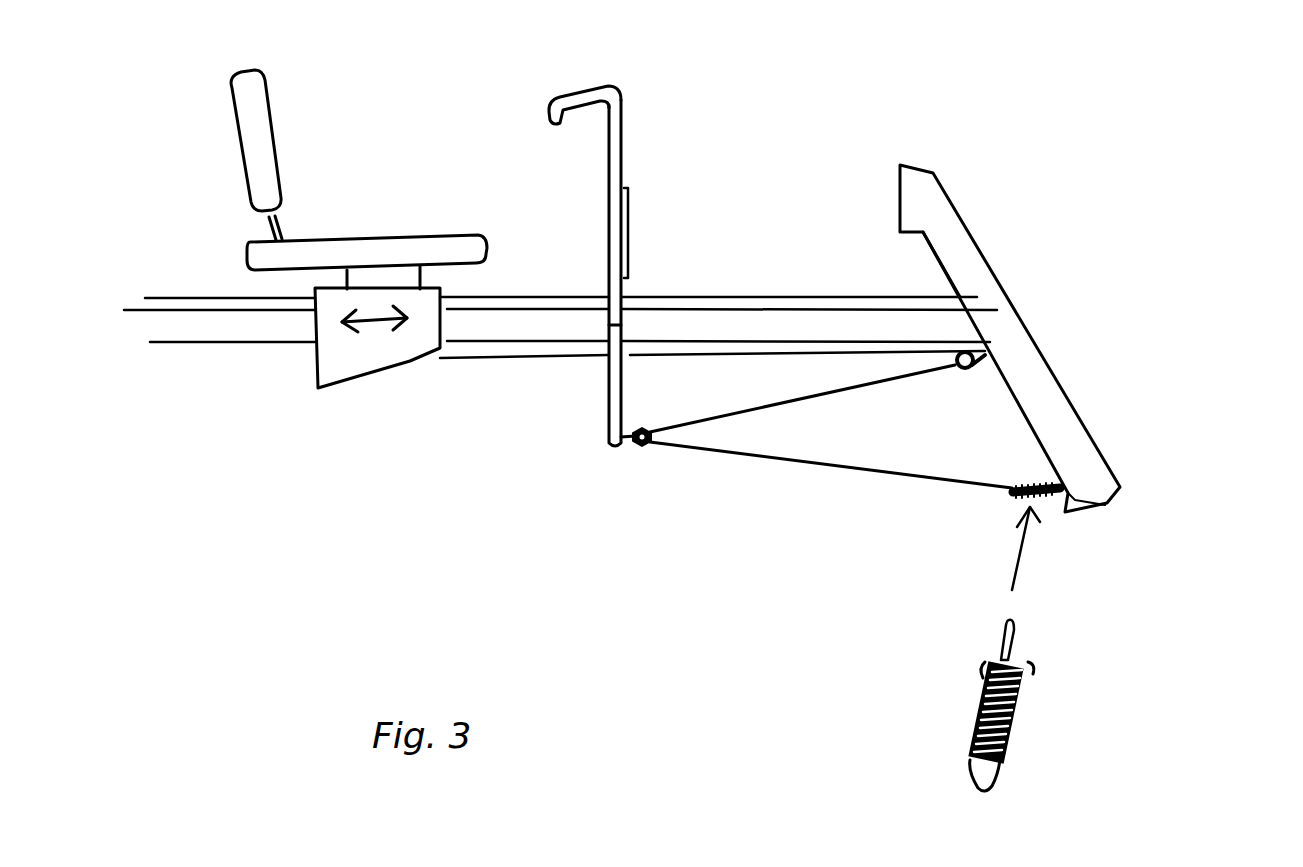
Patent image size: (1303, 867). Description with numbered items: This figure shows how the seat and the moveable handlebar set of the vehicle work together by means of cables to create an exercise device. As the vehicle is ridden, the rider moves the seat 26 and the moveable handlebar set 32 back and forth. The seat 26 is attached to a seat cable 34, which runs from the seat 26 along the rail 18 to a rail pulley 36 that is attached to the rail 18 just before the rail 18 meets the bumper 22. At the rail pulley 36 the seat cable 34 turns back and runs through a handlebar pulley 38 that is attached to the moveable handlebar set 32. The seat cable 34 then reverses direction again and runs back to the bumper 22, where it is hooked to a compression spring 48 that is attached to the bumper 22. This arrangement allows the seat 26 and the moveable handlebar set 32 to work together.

The rail 18 is at (706, 300).
The bumper 22 is at (1077, 447).
The seat 26 is at (255, 102).
The moveable handlebar set 32 is at (617, 87).
The seat cable 34 is at (478, 358).
The rail pulley 36 is at (997, 350).
The handlebar pulley 38 is at (630, 452).
The compression spring 48 is at (1048, 500).